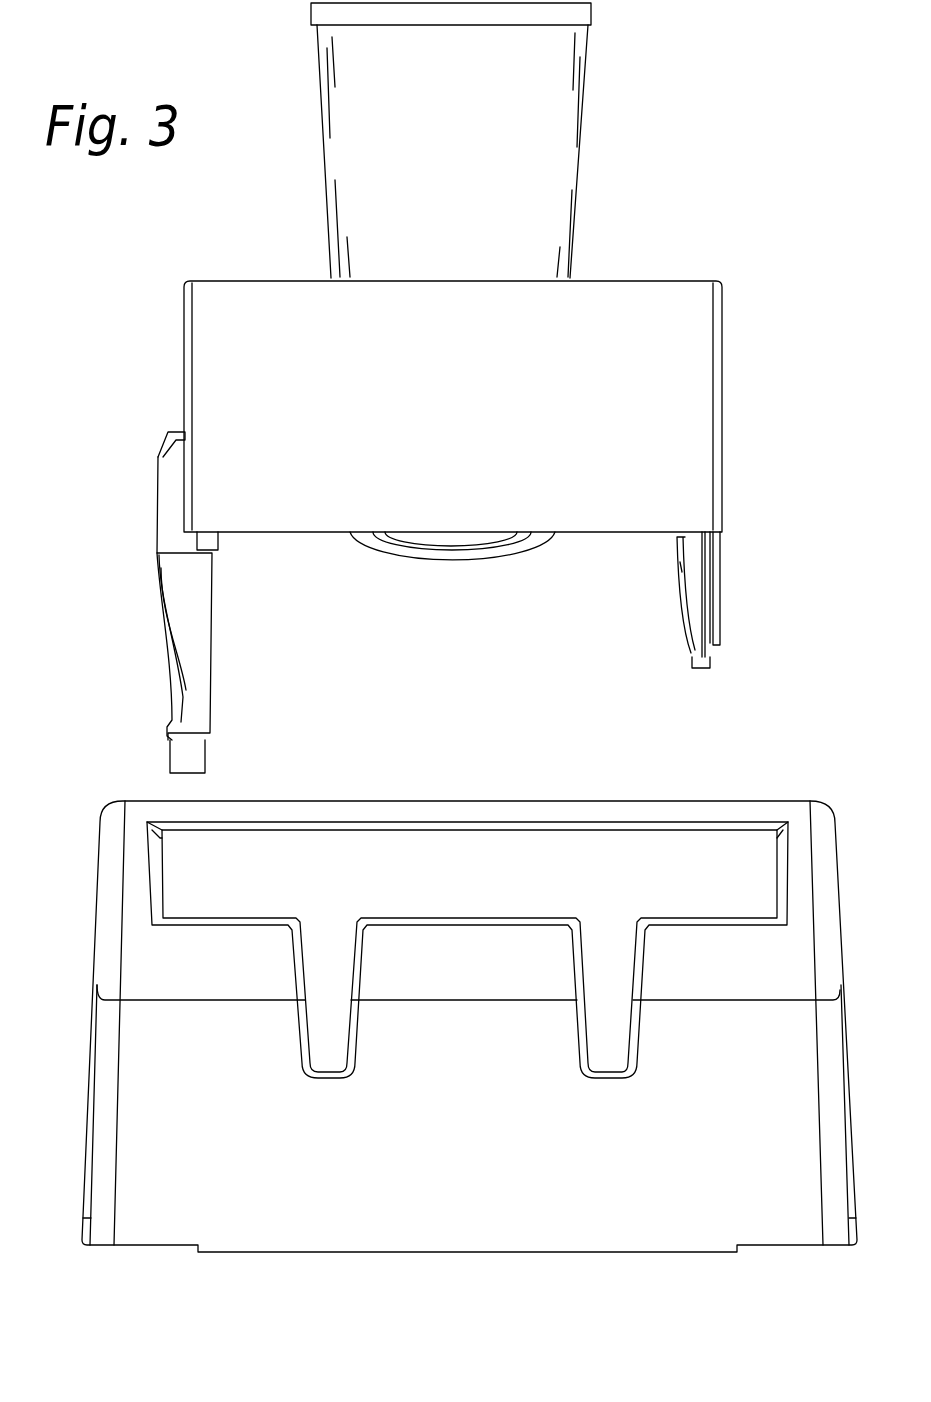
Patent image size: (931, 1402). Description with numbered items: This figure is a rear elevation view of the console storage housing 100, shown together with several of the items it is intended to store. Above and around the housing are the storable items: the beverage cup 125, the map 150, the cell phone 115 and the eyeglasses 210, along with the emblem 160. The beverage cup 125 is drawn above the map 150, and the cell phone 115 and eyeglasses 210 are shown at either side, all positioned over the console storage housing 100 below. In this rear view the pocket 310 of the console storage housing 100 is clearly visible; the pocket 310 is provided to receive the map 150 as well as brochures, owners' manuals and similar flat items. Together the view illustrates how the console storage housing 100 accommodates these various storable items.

The console storage housing 100 is at (375, 752).
The cell phone 115 is at (205, 598).
The beverage cup 125 is at (450, 91).
The map 150 is at (658, 341).
The emblem 160 is at (447, 550).
The eyeglasses 210 is at (712, 598).
The pocket 310 is at (531, 860).